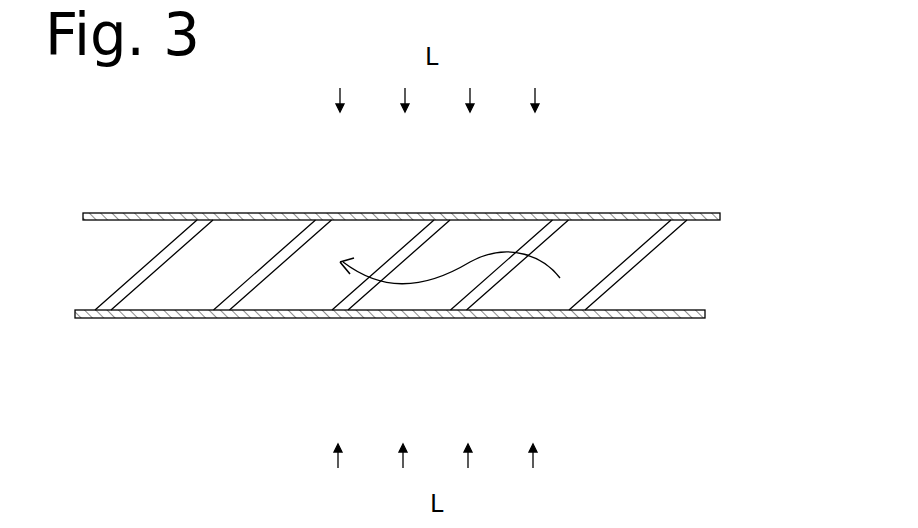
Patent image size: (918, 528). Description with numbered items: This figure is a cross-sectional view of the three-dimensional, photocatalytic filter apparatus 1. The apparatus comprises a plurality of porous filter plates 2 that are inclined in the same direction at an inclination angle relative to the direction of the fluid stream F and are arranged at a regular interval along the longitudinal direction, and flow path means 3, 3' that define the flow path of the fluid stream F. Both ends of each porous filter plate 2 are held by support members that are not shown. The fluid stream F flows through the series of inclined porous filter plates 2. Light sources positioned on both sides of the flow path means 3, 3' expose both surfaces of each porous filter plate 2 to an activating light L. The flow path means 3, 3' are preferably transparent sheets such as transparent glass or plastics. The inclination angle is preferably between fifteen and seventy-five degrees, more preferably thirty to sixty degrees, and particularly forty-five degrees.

The three-dimensional, photocatalytic filter apparatus 1 is at (613, 158).
The porous filter plate 2 is at (157, 310).
The flow path means 3 is at (401, 174).
The flow path means 3' is at (390, 361).